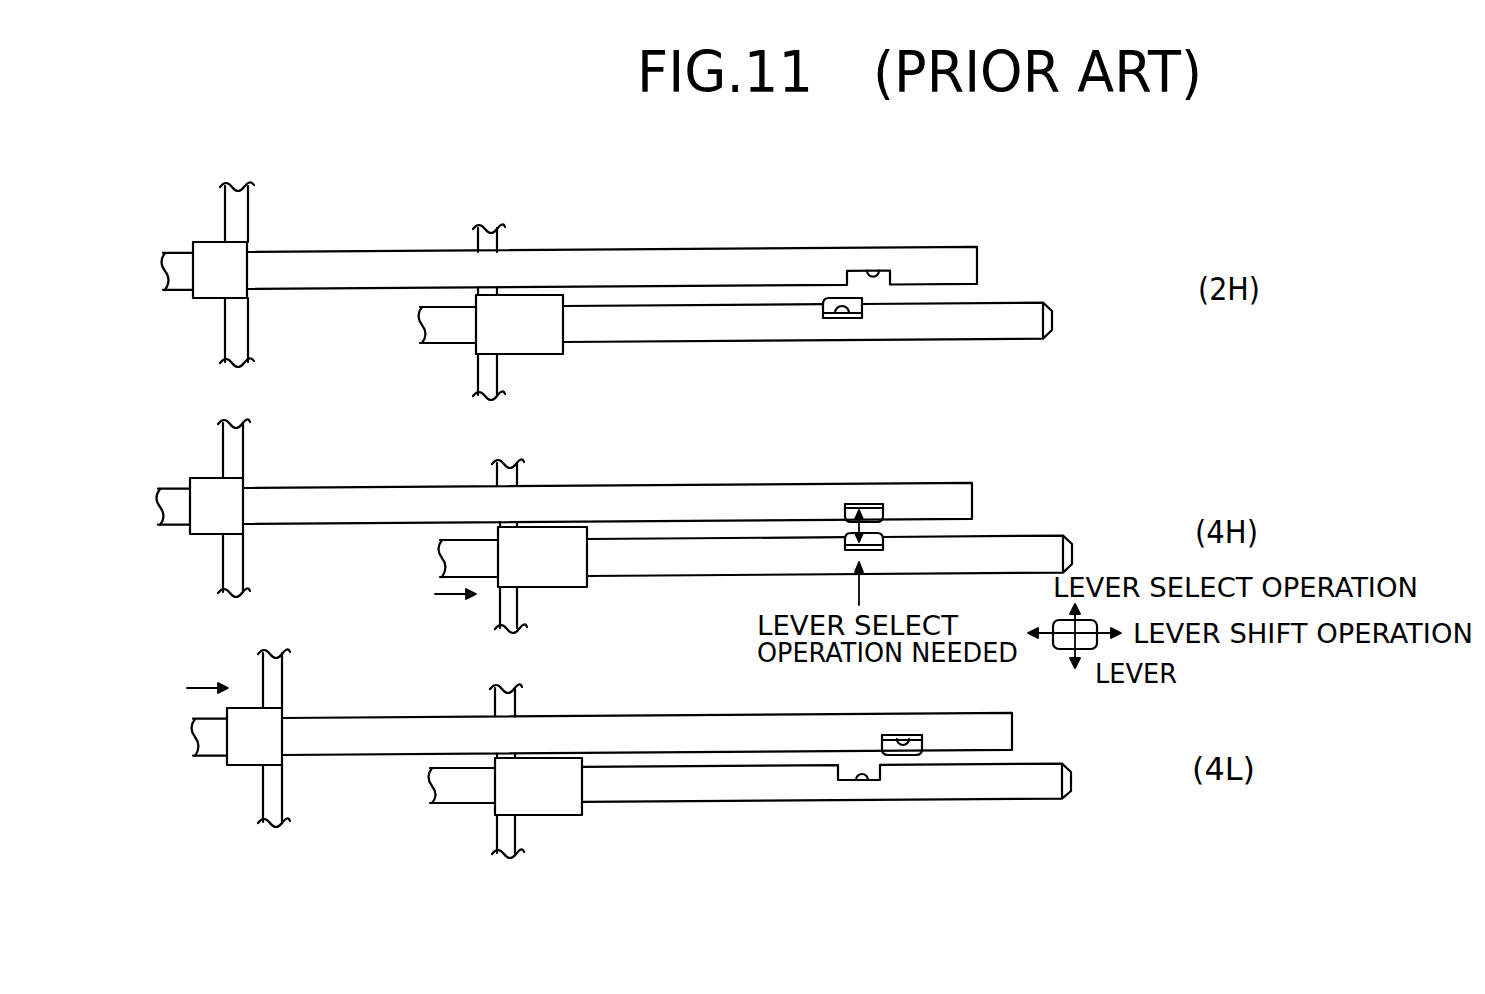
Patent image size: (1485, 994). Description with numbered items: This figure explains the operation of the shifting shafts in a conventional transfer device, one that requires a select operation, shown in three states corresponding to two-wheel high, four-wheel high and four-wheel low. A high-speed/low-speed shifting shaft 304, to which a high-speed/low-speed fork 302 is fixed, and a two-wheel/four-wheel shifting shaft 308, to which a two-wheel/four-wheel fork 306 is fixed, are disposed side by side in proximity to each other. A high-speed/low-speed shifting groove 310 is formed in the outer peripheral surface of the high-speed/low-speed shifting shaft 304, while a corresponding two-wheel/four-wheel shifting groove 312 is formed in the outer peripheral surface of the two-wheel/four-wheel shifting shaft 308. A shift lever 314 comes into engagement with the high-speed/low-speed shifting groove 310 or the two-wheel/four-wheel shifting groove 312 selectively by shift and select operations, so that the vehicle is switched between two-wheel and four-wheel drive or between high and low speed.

The high-speed/low-speed fork 302 is at (243, 197).
The high-speed/low-speed shifting shaft 304 is at (745, 258).
The two-wheel/four-wheel fork 306 is at (487, 377).
The two-wheel/four-wheel shifting shaft 308 is at (735, 323).
The high-speed/low-speed shifting groove 310 is at (873, 272).
The two-wheel/four-wheel shifting groove 312 is at (847, 318).
The shift lever 314 is at (862, 308).